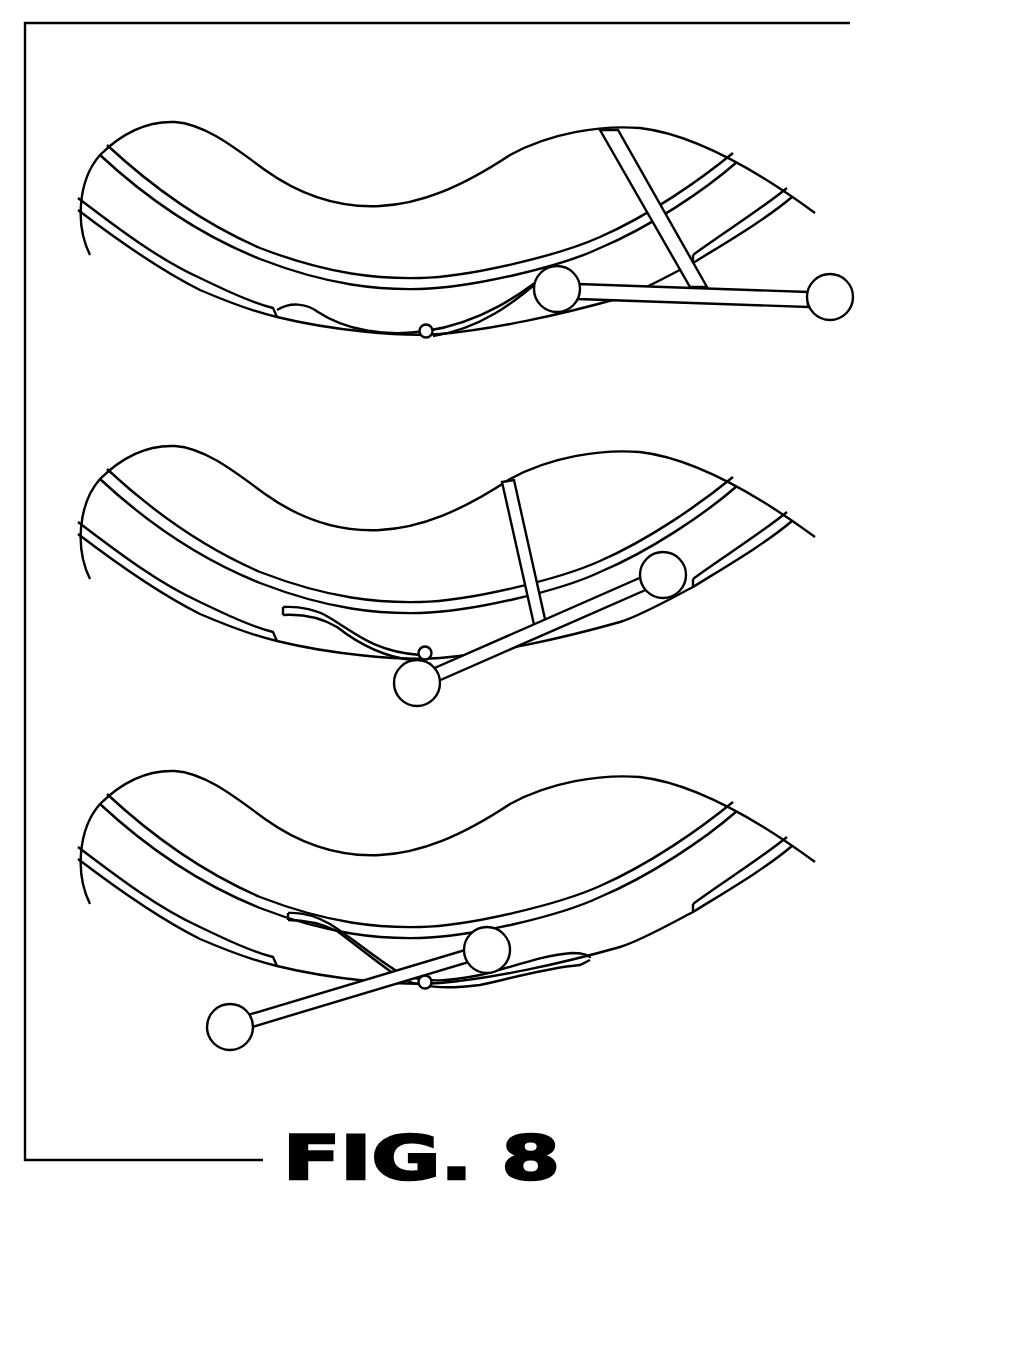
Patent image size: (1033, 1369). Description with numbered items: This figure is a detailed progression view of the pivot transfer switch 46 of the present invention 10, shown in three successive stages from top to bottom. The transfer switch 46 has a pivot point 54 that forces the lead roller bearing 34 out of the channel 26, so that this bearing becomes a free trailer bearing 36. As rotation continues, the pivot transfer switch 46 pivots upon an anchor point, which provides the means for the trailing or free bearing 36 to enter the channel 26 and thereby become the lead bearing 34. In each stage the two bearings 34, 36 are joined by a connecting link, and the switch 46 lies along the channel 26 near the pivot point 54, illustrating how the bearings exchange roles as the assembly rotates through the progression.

The present invention 10 is at (465, 575).
The channel 26 is at (175, 236).
The lead roller bearing 34 is at (548, 297).
The free trailer bearing 36 is at (832, 307).
The pivot transfer switch 46 is at (290, 318).
The pivot point 54 is at (450, 658).